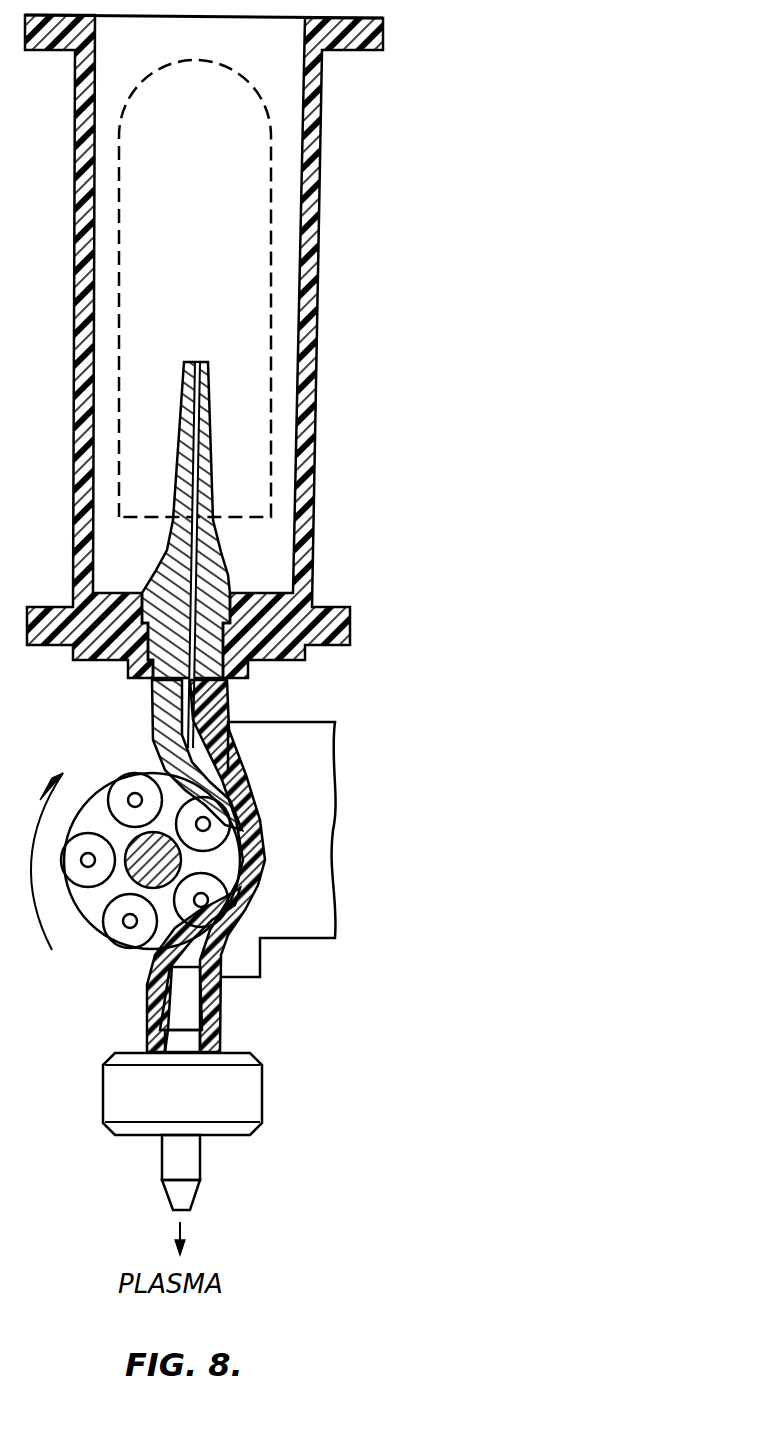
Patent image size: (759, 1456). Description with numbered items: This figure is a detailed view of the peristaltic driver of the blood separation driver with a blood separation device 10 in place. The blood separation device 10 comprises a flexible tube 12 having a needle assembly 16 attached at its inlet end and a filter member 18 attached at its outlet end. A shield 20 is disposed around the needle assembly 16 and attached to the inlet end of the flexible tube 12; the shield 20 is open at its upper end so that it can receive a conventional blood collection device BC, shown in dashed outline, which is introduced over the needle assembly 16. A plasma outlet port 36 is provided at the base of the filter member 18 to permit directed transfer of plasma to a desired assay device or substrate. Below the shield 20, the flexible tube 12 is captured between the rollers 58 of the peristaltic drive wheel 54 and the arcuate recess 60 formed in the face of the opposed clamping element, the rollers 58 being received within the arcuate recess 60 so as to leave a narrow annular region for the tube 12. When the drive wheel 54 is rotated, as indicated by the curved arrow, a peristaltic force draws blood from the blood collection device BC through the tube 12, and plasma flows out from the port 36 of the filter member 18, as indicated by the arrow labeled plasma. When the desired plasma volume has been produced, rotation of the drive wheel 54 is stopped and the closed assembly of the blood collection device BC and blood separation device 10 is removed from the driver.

The blood separation device 10 is at (380, 260).
The flexible tube 12 is at (225, 705).
The needle assembly 16 is at (222, 565).
The filter member 18 is at (245, 1085).
The shield 20 is at (316, 350).
The plasma outlet port 36 is at (190, 1165).
The peristaltic drive wheel 54 is at (122, 952).
The rollers 58 is at (87, 843).
The arcuate recess 60 is at (262, 858).
The blood collection device BC is at (247, 178).